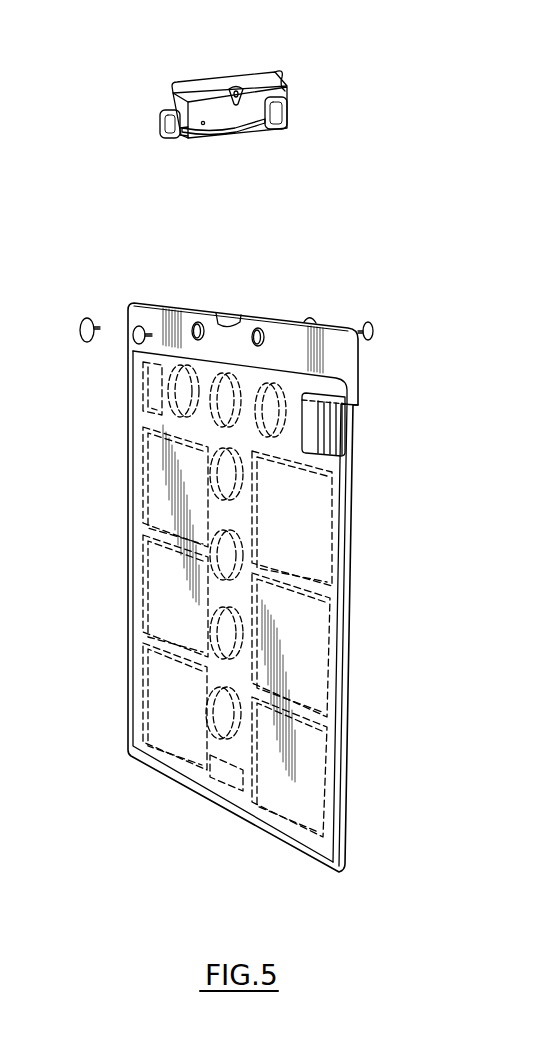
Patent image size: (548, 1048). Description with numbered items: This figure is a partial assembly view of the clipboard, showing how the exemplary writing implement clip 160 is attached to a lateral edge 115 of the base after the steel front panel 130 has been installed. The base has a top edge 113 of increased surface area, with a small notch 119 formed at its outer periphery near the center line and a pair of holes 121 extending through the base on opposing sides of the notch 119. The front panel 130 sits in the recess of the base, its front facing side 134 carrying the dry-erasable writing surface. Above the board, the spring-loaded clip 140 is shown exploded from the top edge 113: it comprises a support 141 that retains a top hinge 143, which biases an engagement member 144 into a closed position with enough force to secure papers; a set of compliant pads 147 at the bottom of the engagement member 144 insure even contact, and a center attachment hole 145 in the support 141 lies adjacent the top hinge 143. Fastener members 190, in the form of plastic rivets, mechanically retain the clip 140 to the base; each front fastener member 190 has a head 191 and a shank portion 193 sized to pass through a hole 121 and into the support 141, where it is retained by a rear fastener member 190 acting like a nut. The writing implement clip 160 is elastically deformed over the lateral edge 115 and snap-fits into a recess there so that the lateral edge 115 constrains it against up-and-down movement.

The top edge 113 is at (327, 342).
The lateral edge 115 is at (346, 638).
The notch 119 is at (222, 312).
The holes 121 is at (199, 320).
The front panel 130 is at (257, 782).
The front facing side 134 is at (158, 705).
The spring-loaded clip 140 is at (256, 104).
The support 141 is at (250, 133).
The top hinge 143 is at (235, 82).
The engagement member 144 is at (228, 130).
The center attachment hole 145 is at (228, 91).
The pads 147 is at (168, 128).
The writing implement clip 160 is at (355, 432).
The fastener members 190 is at (137, 347).
The head 191 is at (81, 327).
The shank portion 193 is at (97, 322).